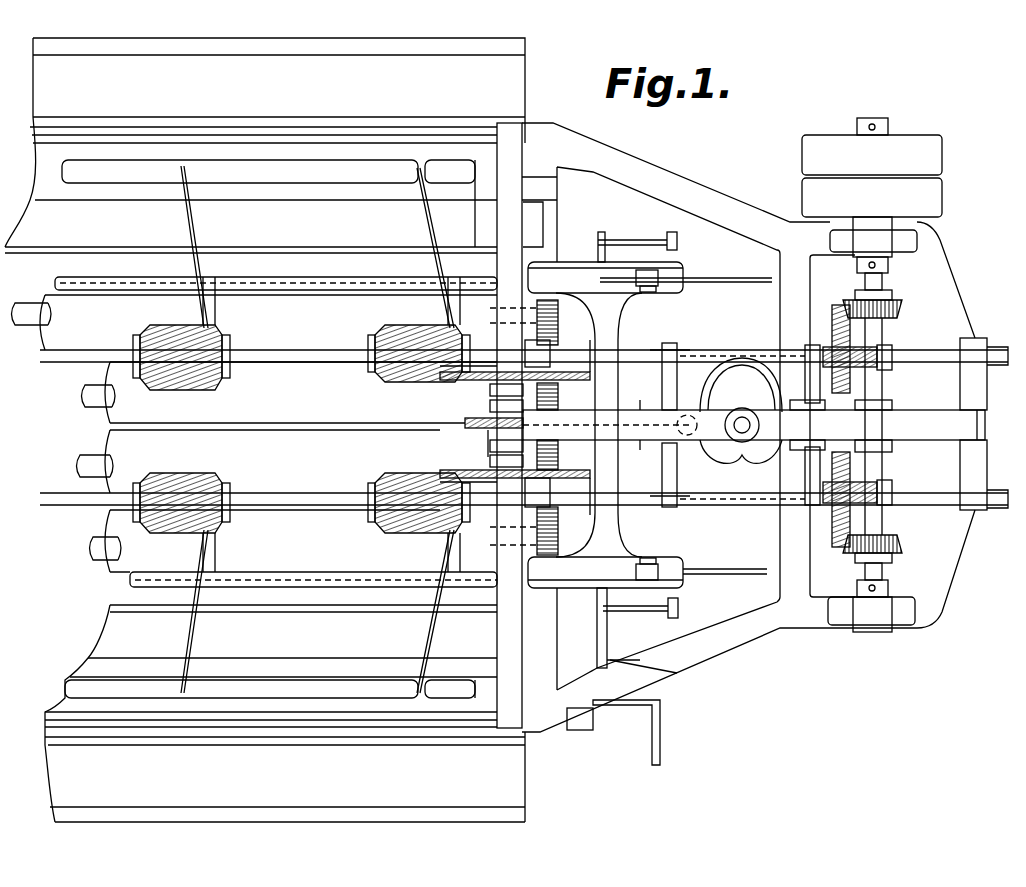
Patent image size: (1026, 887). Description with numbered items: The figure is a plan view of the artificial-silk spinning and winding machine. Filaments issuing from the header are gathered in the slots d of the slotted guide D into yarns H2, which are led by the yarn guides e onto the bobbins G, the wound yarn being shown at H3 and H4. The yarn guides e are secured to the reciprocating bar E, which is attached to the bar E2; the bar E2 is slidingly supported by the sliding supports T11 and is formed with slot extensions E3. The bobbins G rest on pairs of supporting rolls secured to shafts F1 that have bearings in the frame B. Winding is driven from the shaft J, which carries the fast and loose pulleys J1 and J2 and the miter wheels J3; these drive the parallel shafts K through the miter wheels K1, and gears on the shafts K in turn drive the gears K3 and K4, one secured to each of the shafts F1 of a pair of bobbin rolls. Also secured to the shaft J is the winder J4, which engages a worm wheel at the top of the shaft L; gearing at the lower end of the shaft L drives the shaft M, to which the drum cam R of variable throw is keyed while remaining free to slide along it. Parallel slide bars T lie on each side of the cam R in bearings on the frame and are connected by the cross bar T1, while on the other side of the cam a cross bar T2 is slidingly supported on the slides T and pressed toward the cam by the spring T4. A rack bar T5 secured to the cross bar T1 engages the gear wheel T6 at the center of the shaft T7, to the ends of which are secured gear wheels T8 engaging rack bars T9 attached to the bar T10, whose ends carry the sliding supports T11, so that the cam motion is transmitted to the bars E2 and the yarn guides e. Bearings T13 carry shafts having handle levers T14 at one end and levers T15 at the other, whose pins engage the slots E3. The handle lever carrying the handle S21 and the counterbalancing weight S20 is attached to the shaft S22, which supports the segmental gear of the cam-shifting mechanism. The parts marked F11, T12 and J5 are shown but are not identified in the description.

The frame B is at (265, 430).
The slotted guide D is at (266, 431).
The slots d is at (268, 430).
The reciprocating bar E is at (268, 277).
The shafts F1 is at (268, 433).
The roll journal F11 is at (90, 545).
The bobbins G is at (135, 352).
The wound yarn H3 is at (185, 325).
The wound yarn H4 is at (136, 337).
The yarn H2 is at (196, 224).
The yarn guides e is at (216, 312).
The slide bars T is at (700, 350).
The shafts K is at (755, 350).
The gear wheels T8 is at (478, 381).
The gear wheel T6 is at (478, 418).
The rack bars T9 is at (442, 385).
The shaft T7 is at (486, 440).
The rack bar T5 is at (490, 446).
The bar T10 is at (603, 427).
The gear K3 is at (558, 322).
The gear K4 is at (558, 394).
The spring T4 is at (892, 470).
The bar E2 is at (745, 278).
The slot extensions E3 is at (650, 286).
The handle levers T14 is at (665, 240).
The levers T15 is at (601, 235).
The collar T12 is at (672, 268).
The bearings T13 is at (636, 620).
The sliding supports T11 is at (628, 649).
The shaft L is at (754, 446).
The shaft M is at (737, 440).
The drum cam R is at (741, 410).
The cross bar T2 is at (810, 452).
The cross bar T1 is at (655, 445).
The fast pulley J1 is at (872, 146).
The loose pulley J2 is at (872, 197).
The shaft J is at (885, 392).
The miter wheels J3 is at (885, 320).
The bevel gear J5 is at (890, 545).
The winder J4 is at (812, 418).
The miter wheels K1 is at (834, 320).
The counterbalancing weight S20 is at (580, 730).
The handle S21 is at (660, 736).
The shaft S22 is at (640, 660).